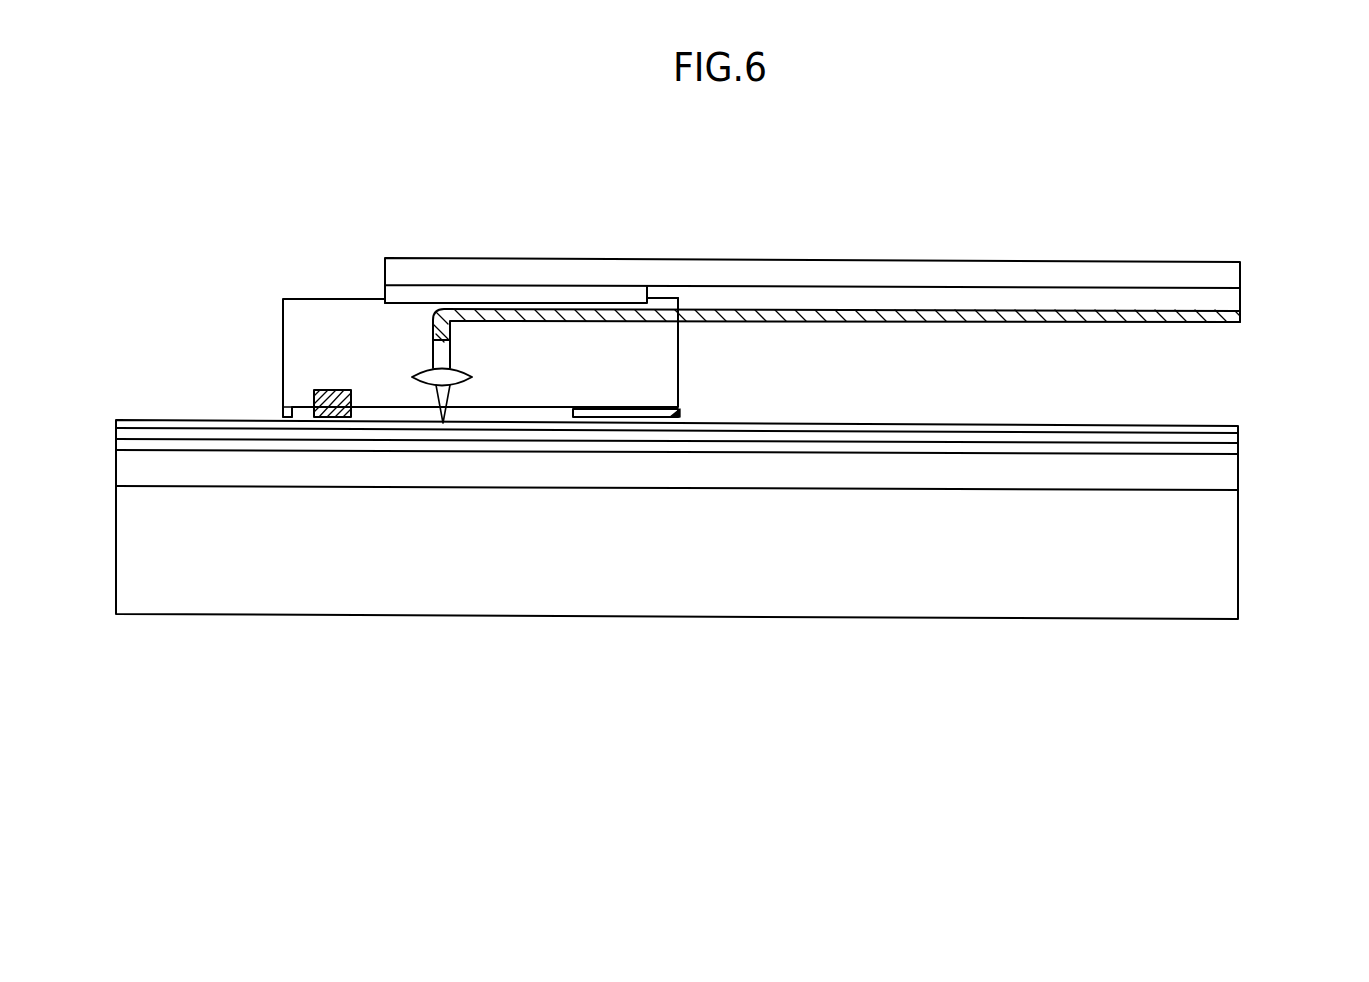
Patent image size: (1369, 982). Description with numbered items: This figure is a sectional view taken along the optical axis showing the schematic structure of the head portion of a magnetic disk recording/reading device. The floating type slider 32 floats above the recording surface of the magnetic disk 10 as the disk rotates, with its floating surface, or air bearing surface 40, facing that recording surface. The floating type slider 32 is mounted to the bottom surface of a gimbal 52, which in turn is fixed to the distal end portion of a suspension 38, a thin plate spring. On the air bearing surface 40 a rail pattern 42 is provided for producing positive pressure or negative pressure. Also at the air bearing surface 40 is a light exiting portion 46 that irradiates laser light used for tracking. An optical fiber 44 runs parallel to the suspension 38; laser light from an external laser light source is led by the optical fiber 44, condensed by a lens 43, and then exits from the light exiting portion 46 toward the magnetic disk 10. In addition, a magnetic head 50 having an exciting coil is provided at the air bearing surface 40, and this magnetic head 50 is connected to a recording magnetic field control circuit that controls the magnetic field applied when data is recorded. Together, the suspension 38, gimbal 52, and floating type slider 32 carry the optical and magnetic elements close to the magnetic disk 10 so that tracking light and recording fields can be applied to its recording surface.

The magnetic disk 10 is at (1272, 424).
The floating type slider 32 is at (667, 384).
The suspension 38 is at (1228, 277).
The floating surface (ABS) 40 is at (548, 412).
The rail pattern 42 is at (291, 412).
The lens 43 is at (463, 372).
The optical fiber 44 is at (1037, 313).
The light exiting portion 46 is at (441, 425).
The magnetic head 50 is at (332, 412).
The gimbal 52 is at (582, 293).